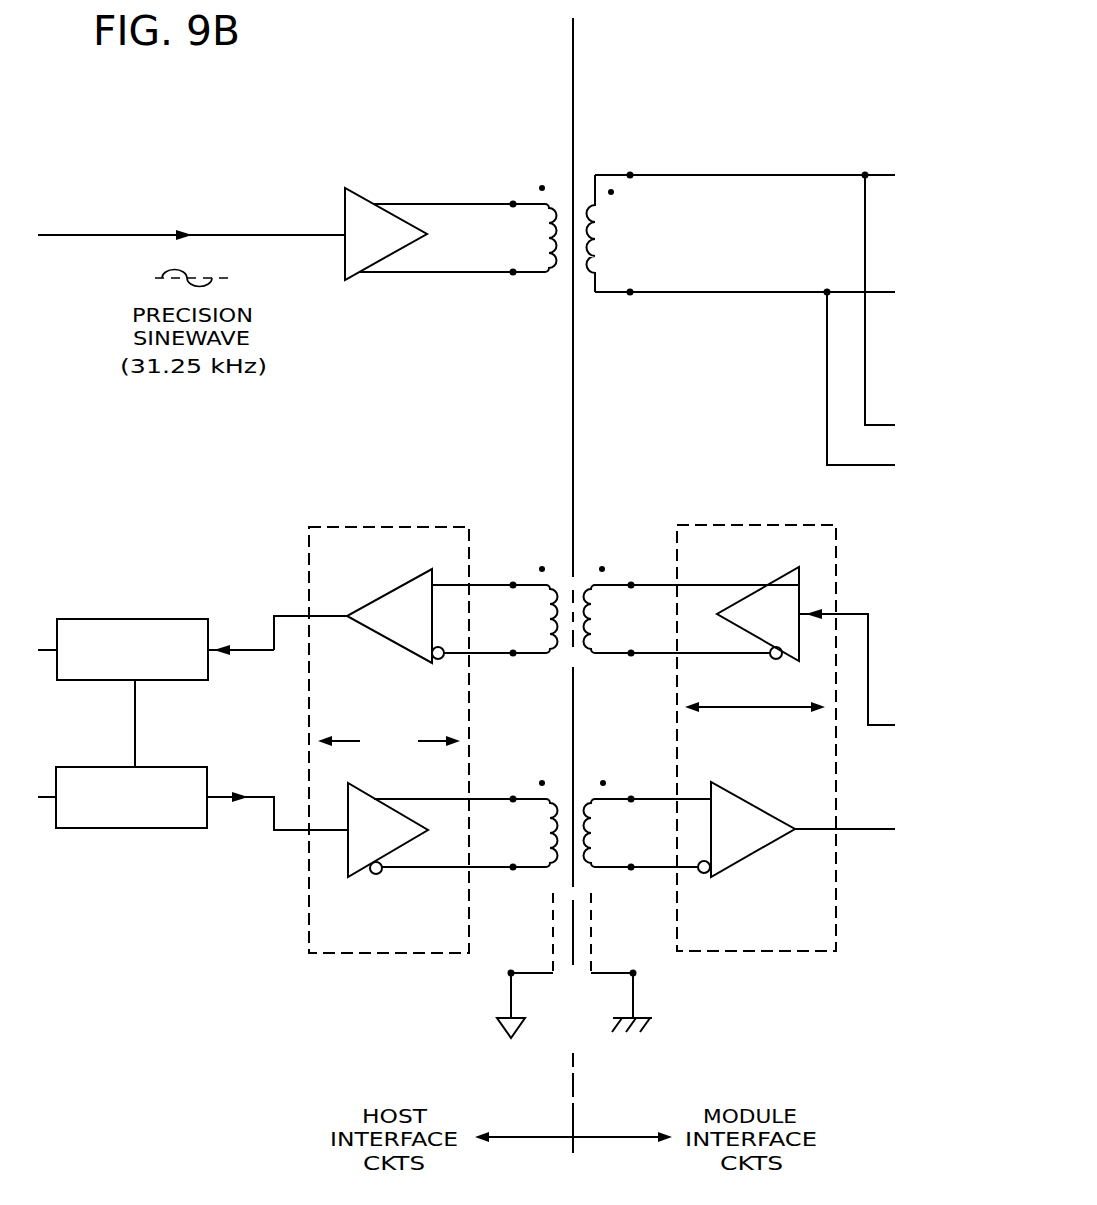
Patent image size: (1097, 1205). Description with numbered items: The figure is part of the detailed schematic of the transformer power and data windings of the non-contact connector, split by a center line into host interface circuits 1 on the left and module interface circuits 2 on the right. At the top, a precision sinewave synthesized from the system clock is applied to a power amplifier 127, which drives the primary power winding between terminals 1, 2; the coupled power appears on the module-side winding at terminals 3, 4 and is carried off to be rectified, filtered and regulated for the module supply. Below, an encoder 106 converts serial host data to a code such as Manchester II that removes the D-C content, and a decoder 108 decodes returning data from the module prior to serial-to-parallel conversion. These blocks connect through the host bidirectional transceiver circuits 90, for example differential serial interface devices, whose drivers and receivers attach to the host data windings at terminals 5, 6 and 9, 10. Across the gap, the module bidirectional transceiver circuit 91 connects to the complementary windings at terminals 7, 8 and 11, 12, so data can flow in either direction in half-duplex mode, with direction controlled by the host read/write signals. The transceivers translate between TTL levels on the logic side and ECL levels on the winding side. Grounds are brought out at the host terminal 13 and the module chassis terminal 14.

The host interface circuits 1 is at (385, 1060).
The module interface circuits 2 is at (742, 1060).
The power winding terminal 3 is at (741, 220).
The power winding terminal 4 is at (745, 306).
The data winding terminal 5 is at (534, 605).
The data winding terminal 6 is at (519, 667).
The data winding terminal 7 is at (609, 605).
The data winding terminal 8 is at (627, 667).
The data winding terminal 9 is at (534, 819).
The data winding terminal 10 is at (526, 882).
The data winding terminal 11 is at (615, 819).
The data winding terminal 12 is at (622, 882).
The ground terminal 13 is at (525, 965).
The ground terminal 14 is at (621, 962).
The bidirectional transceiver circuits 90 is at (389, 526).
The bidirectional transceiver circuit 91 is at (730, 525).
The encoder 106 is at (125, 828).
The decoder 108 is at (133, 619).
The power amplifier 127 is at (355, 274).